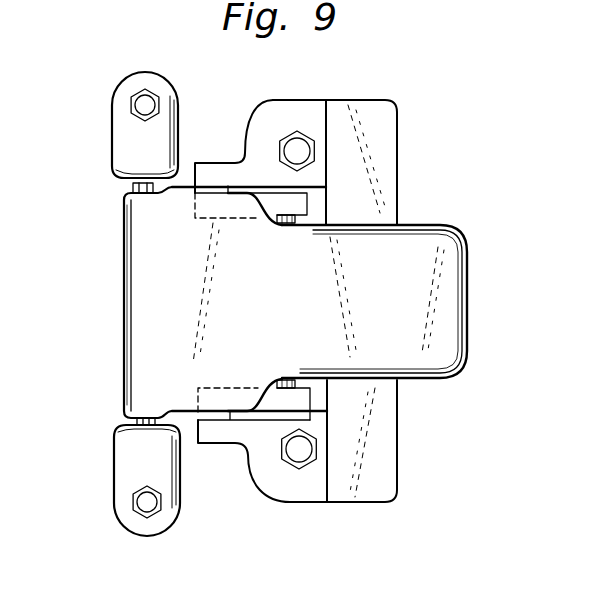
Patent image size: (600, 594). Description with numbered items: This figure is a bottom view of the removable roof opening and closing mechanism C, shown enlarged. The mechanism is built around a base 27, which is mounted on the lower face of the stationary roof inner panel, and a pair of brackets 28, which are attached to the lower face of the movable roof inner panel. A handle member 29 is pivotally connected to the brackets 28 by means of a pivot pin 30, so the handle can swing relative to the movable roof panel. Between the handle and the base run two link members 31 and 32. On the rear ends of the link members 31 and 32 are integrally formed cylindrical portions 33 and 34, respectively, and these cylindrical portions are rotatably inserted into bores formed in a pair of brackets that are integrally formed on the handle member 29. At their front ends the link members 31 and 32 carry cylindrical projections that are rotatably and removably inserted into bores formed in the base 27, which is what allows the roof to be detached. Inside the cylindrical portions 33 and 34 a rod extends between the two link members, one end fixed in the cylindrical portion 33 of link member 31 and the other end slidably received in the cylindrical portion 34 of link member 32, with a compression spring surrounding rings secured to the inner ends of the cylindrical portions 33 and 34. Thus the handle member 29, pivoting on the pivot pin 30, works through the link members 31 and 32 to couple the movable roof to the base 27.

The removable roof opening and closing mechanism C is at (441, 210).
The base 27 is at (384, 150).
The brackets 28 is at (120, 140).
The handle member 29 is at (466, 306).
The pivot pin 30 is at (122, 194).
The link member 31 is at (268, 400).
The link member 32 is at (265, 202).
The cylindrical portion 33 is at (293, 389).
The cylindrical portion 34 is at (304, 214).